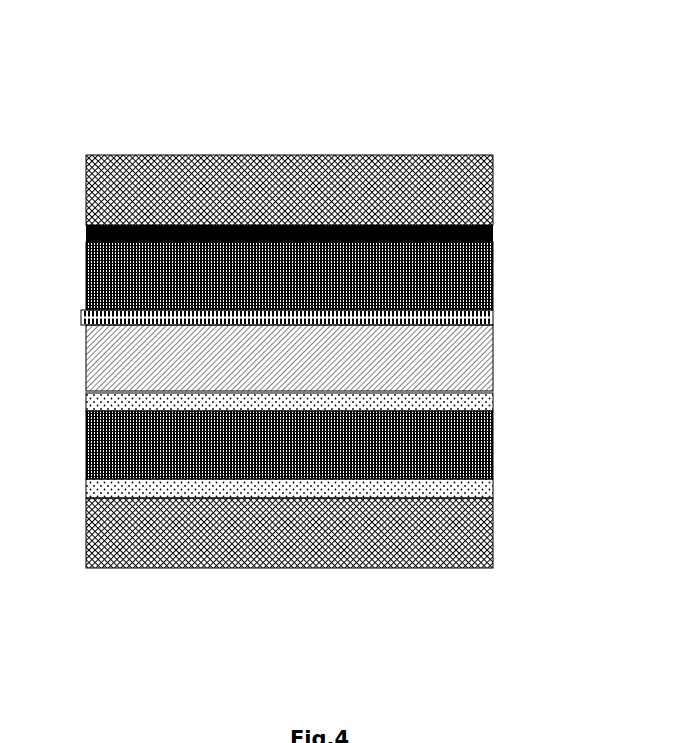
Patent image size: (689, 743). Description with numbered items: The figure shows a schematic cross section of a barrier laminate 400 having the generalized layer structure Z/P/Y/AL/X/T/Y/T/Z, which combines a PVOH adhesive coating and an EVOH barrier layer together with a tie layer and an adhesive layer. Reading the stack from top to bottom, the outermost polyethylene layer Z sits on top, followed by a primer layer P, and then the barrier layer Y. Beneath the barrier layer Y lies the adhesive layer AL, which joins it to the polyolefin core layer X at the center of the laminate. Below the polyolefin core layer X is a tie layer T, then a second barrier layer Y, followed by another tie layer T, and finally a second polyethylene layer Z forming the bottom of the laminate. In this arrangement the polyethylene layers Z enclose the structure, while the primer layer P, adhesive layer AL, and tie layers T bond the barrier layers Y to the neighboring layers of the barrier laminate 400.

The barrier laminate 400 is at (295, 72).
The polyethylene layer Z is at (488, 178).
The primer layer P is at (488, 222).
The barrier layer Y is at (488, 267).
The adhesive layer AL is at (486, 308).
The polyolefin core layer X is at (488, 350).
The tie layer T is at (488, 400).